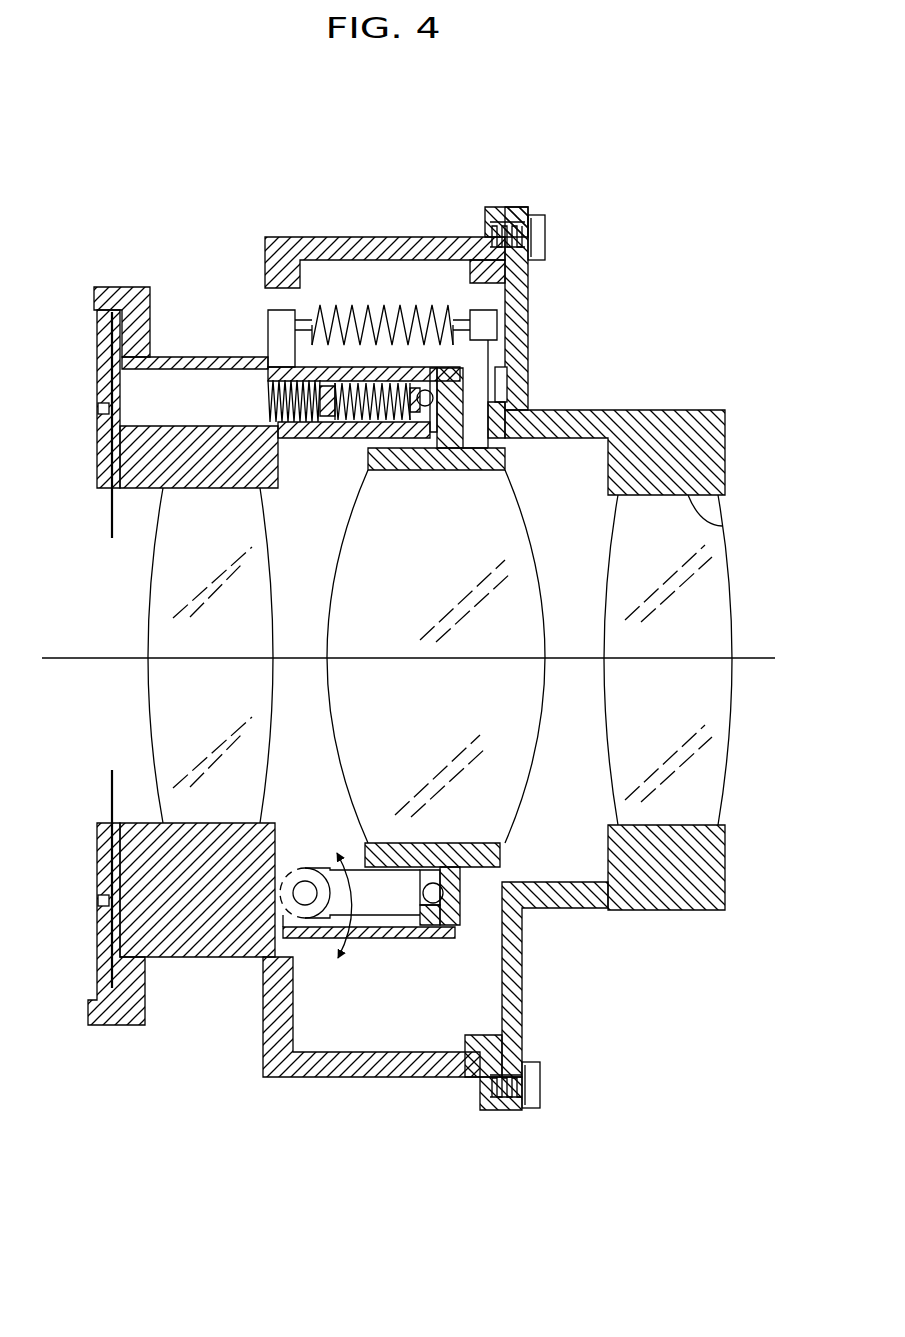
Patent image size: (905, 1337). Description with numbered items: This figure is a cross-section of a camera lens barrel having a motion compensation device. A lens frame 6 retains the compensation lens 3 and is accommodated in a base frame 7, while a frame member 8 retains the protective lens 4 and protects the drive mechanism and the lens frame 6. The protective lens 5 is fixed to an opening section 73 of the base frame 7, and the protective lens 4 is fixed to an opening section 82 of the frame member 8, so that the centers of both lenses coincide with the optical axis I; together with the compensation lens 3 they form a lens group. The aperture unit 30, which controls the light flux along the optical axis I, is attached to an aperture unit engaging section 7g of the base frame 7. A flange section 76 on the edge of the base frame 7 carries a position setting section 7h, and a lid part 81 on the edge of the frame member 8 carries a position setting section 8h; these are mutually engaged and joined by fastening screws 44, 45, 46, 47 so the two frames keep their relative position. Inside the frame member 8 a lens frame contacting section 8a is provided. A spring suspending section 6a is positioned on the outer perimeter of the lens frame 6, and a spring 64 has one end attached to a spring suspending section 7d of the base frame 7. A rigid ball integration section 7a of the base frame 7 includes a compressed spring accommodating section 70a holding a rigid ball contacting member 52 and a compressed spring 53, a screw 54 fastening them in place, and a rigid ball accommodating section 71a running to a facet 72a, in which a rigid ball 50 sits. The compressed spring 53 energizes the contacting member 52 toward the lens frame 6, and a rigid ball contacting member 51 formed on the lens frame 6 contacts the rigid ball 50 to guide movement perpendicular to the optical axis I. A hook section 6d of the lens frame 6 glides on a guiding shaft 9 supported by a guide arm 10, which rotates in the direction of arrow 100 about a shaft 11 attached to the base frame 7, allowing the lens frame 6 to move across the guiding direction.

The compensation lens 3 is at (505, 525).
The protective lens 4 is at (712, 755).
The protective lens 5 is at (165, 595).
The lens frame 6 is at (508, 870).
The spring suspending section 6a is at (526, 314).
The hook section 6d is at (472, 900).
The base frame 7 is at (213, 950).
The rigid ball integration section 7a is at (322, 362).
The spring suspending section 7d is at (280, 308).
The aperture unit engaging section 7g is at (116, 300).
The position setting section 7h is at (468, 1080).
The frame member 8 is at (668, 410).
The lens frame contacting section 8a is at (505, 392).
The position setting section 8h is at (470, 253).
The guiding shaft 9 is at (435, 903).
The guide arm 10 is at (378, 912).
The shaft 11 is at (306, 898).
The aperture unit 30 is at (100, 446).
The fastening screw 44 is at (545, 228).
The fastening screw 45 is at (557, 208).
The fastening screw 46 is at (540, 1075).
The fastening screw 47 is at (567, 1085).
The rigid ball 50 is at (432, 390).
The rigid ball contacting member 51 is at (435, 445).
The rigid ball contacting member 52 is at (421, 386).
The compressed spring 53 is at (402, 375).
The screw 54 is at (272, 392).
The spring 64 is at (322, 297).
The compressed spring accommodating section 70a is at (338, 438).
The rigid ball accommodating section 71a is at (443, 372).
The facet 72a is at (515, 292).
The opening section 73 is at (118, 823).
The flange section 76 is at (465, 240).
The lid part 81 is at (526, 372).
The opening section 82 is at (722, 522).
The arrow 100 is at (337, 850).
The optical axis I is at (755, 654).